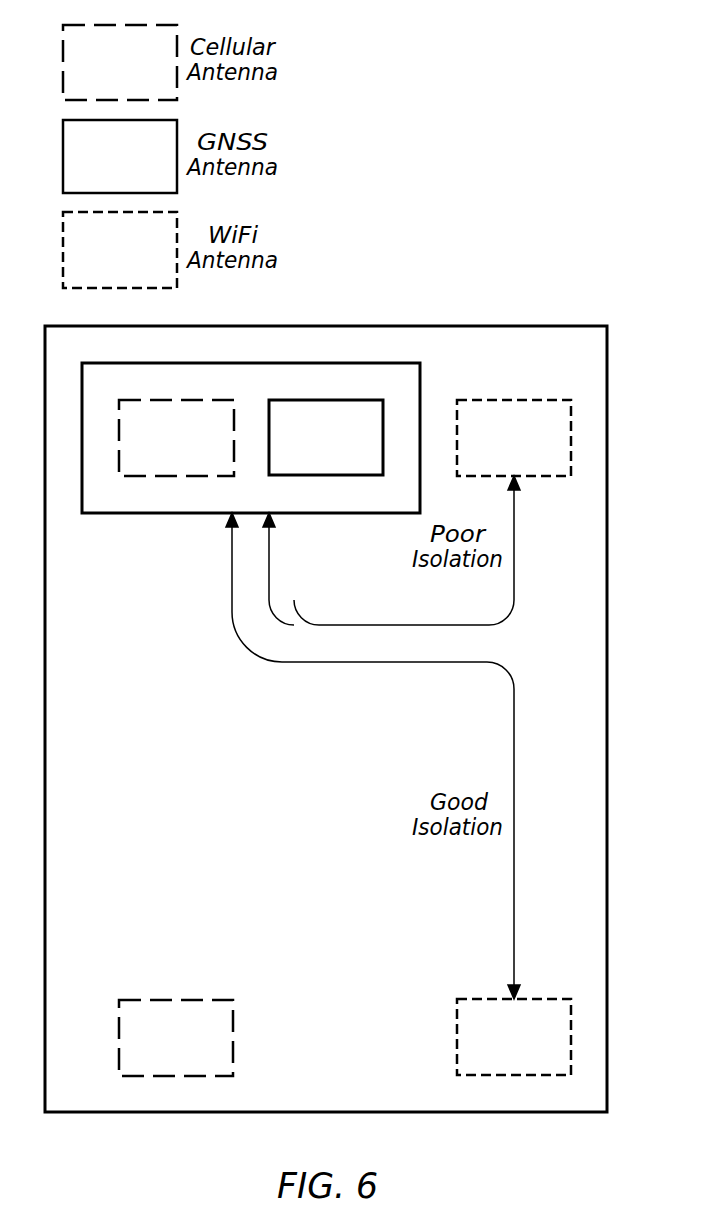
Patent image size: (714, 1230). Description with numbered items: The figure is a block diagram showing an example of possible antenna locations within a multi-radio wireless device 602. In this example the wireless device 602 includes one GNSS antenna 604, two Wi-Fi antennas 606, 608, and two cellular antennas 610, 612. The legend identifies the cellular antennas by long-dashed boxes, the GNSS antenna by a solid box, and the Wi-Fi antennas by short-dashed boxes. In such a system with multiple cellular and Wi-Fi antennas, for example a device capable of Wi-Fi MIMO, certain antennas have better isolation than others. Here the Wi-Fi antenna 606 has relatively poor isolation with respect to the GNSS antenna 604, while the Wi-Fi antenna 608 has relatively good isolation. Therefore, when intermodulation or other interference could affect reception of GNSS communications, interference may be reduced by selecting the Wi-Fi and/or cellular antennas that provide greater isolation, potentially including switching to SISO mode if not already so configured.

The multi-radio device 602 is at (433, 326).
The GNSS antenna 604 is at (347, 448).
The Wi-Fi antenna 606 is at (533, 448).
The Wi-Fi antenna 608 is at (535, 1050).
The cellular antenna 610 is at (197, 448).
The cellular antenna 612 is at (197, 1048).